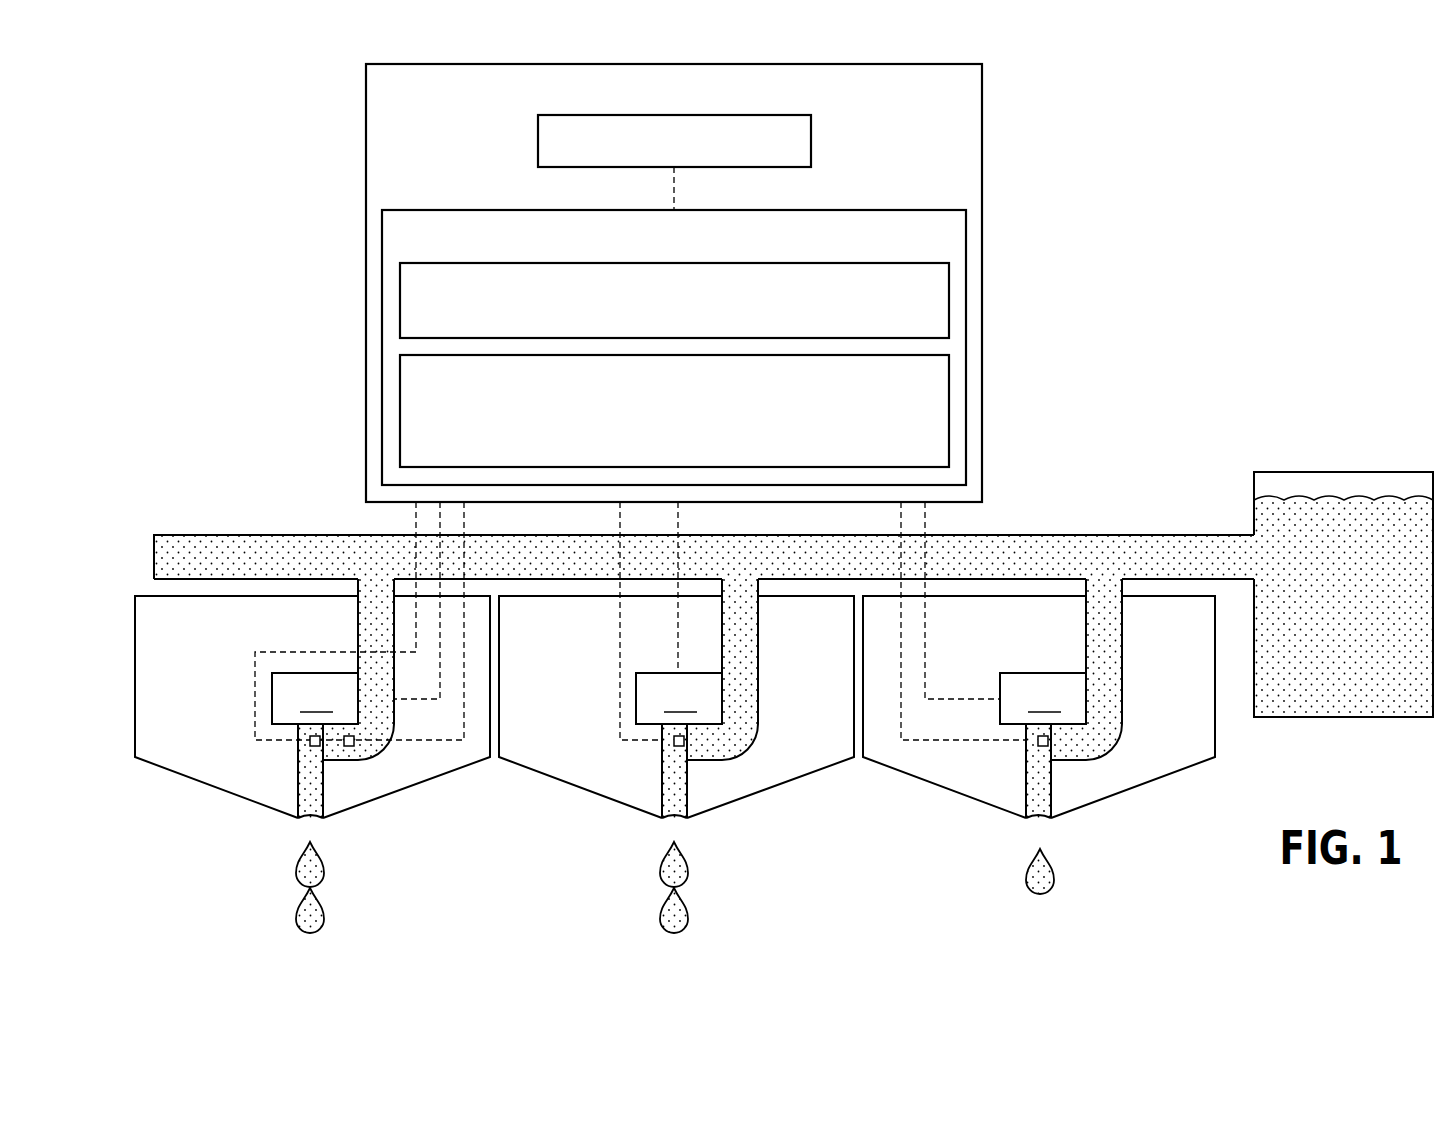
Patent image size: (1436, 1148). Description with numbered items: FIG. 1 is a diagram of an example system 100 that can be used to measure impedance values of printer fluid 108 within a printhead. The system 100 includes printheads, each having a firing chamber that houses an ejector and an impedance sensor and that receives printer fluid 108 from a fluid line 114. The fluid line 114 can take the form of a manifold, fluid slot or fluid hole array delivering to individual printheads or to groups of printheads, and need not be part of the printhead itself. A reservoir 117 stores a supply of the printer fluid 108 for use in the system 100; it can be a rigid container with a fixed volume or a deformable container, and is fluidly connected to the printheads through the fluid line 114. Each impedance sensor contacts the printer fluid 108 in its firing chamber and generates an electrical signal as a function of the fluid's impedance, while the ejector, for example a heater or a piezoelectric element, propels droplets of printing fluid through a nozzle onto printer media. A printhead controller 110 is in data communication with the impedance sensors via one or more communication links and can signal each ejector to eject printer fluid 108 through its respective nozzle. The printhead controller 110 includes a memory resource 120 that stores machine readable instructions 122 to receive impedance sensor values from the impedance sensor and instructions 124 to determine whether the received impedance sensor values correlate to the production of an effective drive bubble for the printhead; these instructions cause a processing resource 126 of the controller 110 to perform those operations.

The system 100 is at (1168, 172).
The printer fluid 108 is at (1395, 500).
The printhead controller 110 is at (366, 100).
The fluid line 114 is at (1108, 535).
The reservoir 117 is at (1345, 472).
The memory resource 120 is at (847, 210).
The instructions 122 is at (949, 300).
The instructions 124 is at (949, 408).
The processing resource 126 is at (538, 141).